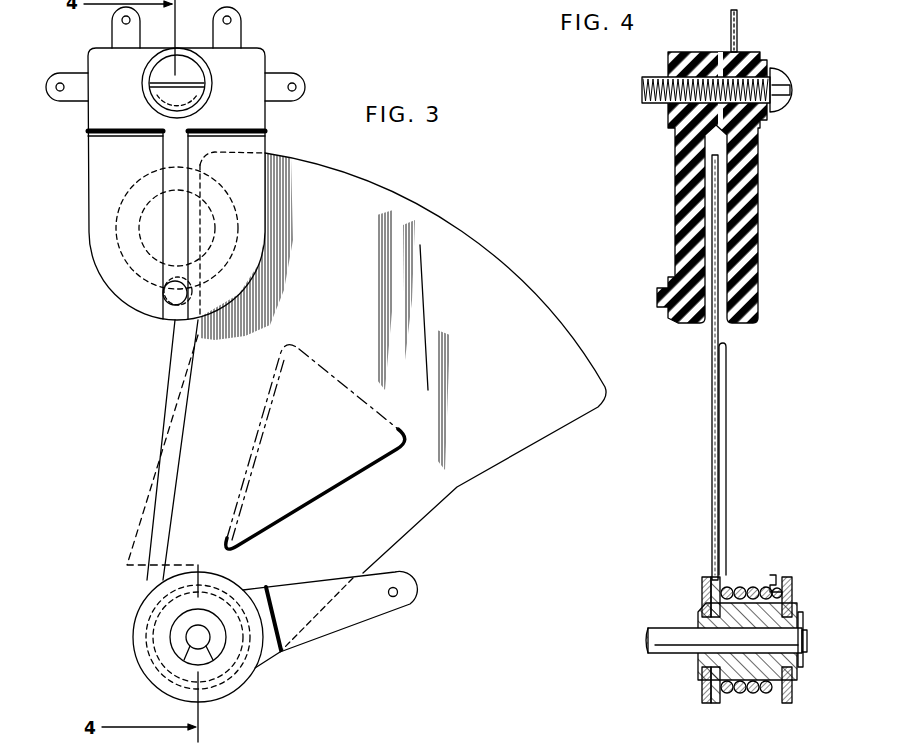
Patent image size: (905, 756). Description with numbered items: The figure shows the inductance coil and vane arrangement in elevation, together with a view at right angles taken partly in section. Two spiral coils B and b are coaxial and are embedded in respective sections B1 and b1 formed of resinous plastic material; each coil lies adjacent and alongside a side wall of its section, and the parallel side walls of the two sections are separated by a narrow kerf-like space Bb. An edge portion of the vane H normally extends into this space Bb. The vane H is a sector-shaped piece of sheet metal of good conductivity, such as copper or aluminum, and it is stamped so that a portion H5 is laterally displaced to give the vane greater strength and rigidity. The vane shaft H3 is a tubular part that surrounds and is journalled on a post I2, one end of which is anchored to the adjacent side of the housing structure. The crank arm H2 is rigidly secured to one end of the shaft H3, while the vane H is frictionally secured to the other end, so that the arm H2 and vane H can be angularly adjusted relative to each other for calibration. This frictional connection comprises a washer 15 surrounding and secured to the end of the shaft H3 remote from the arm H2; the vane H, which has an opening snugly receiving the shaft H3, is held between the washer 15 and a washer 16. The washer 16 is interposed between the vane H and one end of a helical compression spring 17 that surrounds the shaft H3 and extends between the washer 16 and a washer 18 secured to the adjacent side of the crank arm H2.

In FIG. 3, the coil section B1 is at (104, 165).
In FIG. 4, the coil section B1 is at (758, 193).
In FIG. 3, the spiral coil B is at (112, 222).
In FIG. 4, the spiral coil B is at (735, 283).
In FIG. 3, the vane H is at (432, 220).
In FIG. 4, the vane H is at (717, 333).
In FIG. 3, the laterally displaced portion of vane H5 is at (304, 453).
In FIG. 4, the laterally displaced portion of vane H5 is at (723, 385).
In FIG. 3, the vane shaft H3 is at (203, 655).
In FIG. 4, the vane shaft H3 is at (700, 660).
In FIG. 3, the crank arm H2 is at (355, 618).
In FIG. 4, the crank arm H2 is at (790, 577).
In FIG. 3, the helical compression spring 17 is at (147, 628).
In FIG. 4, the helical compression spring 17 is at (760, 690).
In FIG. 3, the post I2 is at (190, 634).
In FIG. 4, the post I2 is at (668, 628).
In FIG. 4, the coil section b1 is at (676, 180).
In FIG. 4, the spiral coil b is at (688, 272).
In FIG. 4, the kerf-like space Bb is at (708, 315).
In FIG. 4, the washer 15 is at (708, 578).
In FIG. 4, the washer 16 is at (716, 580).
In FIG. 4, the washer 18 is at (786, 577).